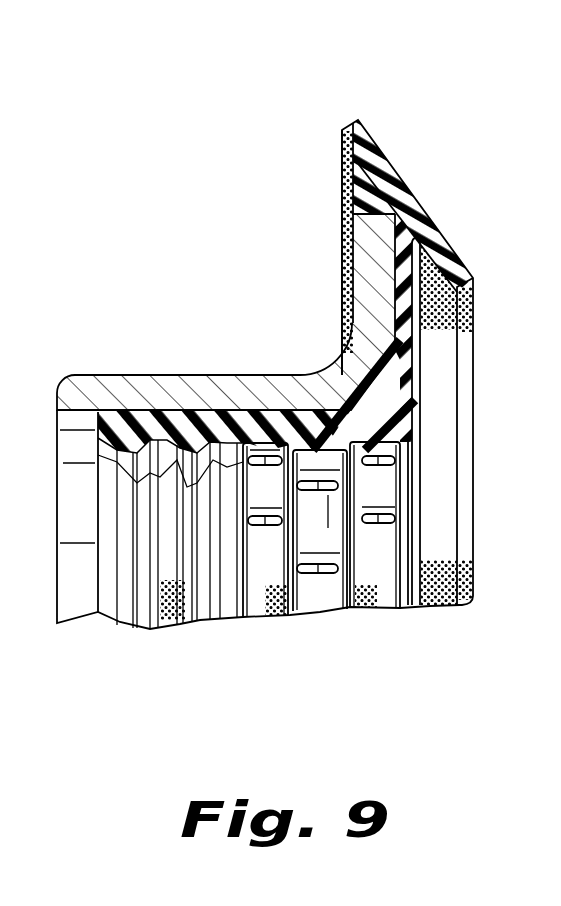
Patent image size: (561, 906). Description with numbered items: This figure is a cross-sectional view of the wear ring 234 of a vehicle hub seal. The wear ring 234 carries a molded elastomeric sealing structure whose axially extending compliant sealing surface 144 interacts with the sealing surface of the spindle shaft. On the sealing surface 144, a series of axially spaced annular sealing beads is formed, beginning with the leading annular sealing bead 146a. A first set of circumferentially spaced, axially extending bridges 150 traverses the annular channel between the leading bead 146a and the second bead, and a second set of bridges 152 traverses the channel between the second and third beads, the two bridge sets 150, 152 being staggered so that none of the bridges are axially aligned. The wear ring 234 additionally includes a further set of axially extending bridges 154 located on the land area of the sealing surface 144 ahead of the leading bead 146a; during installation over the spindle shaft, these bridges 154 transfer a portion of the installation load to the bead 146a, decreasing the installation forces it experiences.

The wear ring 234 is at (135, 142).
The compliant sealing surface 144 is at (247, 428).
The leading annular sealing bead 146a is at (328, 610).
The first set of axially extending bridges 150 is at (320, 481).
The second set of axially extending bridges 152 is at (262, 618).
The additional set of axially extending bridges 154 is at (398, 518).